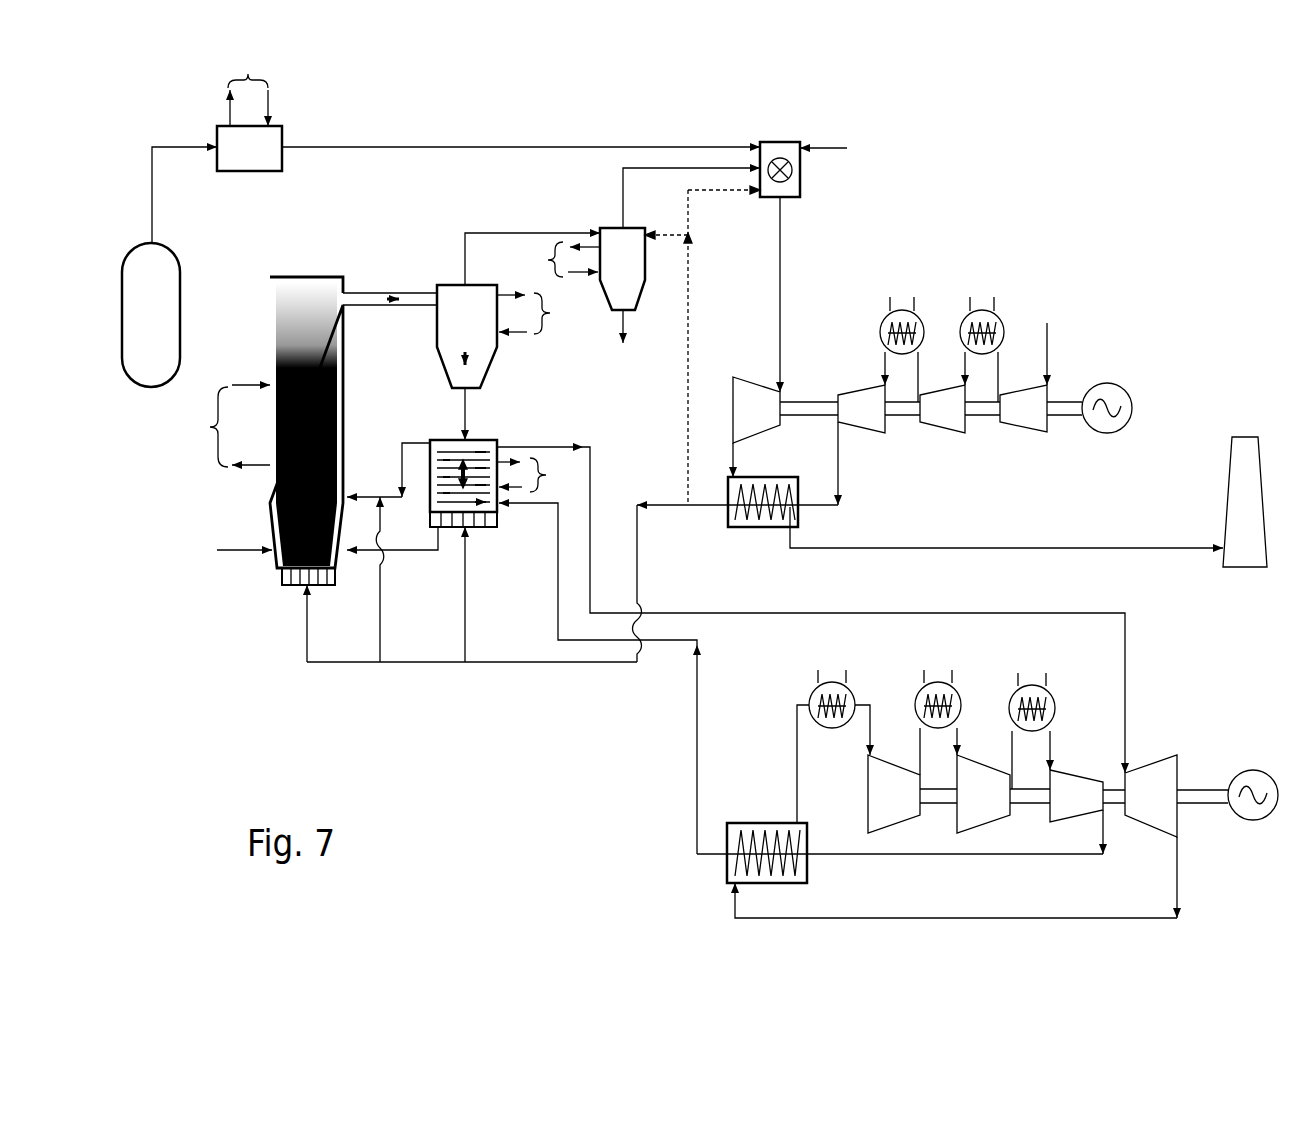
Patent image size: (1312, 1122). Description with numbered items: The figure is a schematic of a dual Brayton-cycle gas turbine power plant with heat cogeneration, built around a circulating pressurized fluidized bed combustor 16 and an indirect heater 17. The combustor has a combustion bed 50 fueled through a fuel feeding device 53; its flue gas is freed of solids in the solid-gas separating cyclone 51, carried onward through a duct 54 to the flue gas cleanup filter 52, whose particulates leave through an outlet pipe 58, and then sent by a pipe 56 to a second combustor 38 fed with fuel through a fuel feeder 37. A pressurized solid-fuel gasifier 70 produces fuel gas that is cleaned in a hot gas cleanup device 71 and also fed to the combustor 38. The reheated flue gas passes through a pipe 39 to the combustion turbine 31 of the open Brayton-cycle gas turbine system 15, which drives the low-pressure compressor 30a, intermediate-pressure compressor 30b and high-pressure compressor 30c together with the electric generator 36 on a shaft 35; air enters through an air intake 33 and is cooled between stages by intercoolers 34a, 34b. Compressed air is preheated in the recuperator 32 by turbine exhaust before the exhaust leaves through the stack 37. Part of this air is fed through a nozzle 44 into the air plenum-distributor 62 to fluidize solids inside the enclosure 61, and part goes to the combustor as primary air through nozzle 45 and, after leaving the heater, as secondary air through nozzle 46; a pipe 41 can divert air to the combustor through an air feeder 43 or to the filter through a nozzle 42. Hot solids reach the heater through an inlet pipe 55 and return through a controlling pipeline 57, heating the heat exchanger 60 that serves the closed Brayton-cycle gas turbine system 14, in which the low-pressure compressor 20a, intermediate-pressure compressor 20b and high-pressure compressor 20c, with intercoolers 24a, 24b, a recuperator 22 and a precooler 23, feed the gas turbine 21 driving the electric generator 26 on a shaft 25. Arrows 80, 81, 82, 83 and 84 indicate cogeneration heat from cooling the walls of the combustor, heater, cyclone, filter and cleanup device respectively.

The closed Brayton-cycle gas turbine system 14 is at (987, 787).
The open Brayton-cycle gas turbine system 15 is at (966, 386).
The circulating pressurized fluidized bed combustor 16 is at (331, 399).
The indirect heater 17 is at (456, 473).
The low-pressure compressor 20a is at (893, 823).
The intermediate-pressure compressor 20b is at (980, 823).
The high-pressure compressor 20c is at (1080, 818).
The gas turbine 21 is at (1137, 823).
The recuperator 22 is at (768, 823).
The precooler 23 is at (805, 693).
The intercooler 24a is at (965, 693).
The intercooler 24b is at (1055, 702).
The shaft 25 is at (1190, 787).
The electric generator 26 is at (1243, 825).
The low-pressure compressor 30a is at (1025, 428).
The intermediate-pressure compressor 30b is at (935, 427).
The high-pressure compressor 30c is at (873, 428).
The combustion turbine 31 is at (772, 430).
The recuperator 32 is at (753, 530).
The air intake 33 is at (1050, 345).
The intercooler 34a is at (982, 308).
The intercooler 34b is at (880, 333).
The shaft 35 is at (1065, 418).
The electric generator 36 is at (1123, 388).
The stack 37 is at (827, 150).
The second combustor 38 is at (802, 183).
The pipe 39 is at (780, 262).
The pipe 41 is at (690, 307).
The nozzle 42 is at (665, 238).
The air feeder 43 is at (714, 192).
The nozzle 44 is at (463, 540).
The nozzle 45 is at (300, 602).
The nozzle 46 is at (368, 492).
The combustion bed 50 is at (267, 348).
The solid-gas separating cyclone 51 is at (437, 347).
The flue gas cleanup filter 52 is at (637, 226).
The fuel feeding device 53 is at (242, 548).
The gas duct 54 is at (483, 230).
The inlet pipe 55 is at (463, 420).
The pipe 56 is at (620, 193).
The controlling pipeline 57 is at (418, 552).
The outlet pipe 58 is at (620, 318).
The heat exchanger 60 is at (447, 457).
The enclosure 61 is at (428, 493).
The air plenum-distributor 62 is at (483, 522).
The pressurized solid-fuel gasifier 70 is at (180, 285).
The hot gas cleanup device 71 is at (242, 173).
The arrows 80 is at (222, 426).
The arrows 81 is at (531, 475).
The arrows 82 is at (536, 313).
The arrows 83 is at (560, 259).
The arrows 84 is at (248, 87).